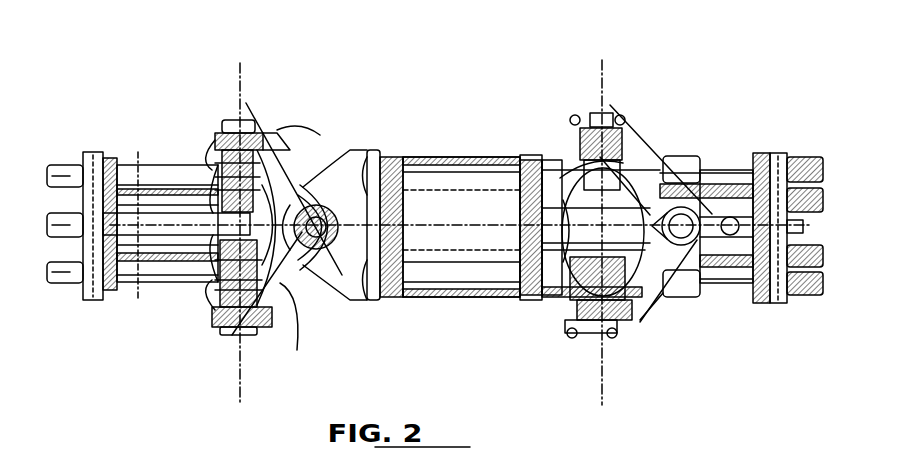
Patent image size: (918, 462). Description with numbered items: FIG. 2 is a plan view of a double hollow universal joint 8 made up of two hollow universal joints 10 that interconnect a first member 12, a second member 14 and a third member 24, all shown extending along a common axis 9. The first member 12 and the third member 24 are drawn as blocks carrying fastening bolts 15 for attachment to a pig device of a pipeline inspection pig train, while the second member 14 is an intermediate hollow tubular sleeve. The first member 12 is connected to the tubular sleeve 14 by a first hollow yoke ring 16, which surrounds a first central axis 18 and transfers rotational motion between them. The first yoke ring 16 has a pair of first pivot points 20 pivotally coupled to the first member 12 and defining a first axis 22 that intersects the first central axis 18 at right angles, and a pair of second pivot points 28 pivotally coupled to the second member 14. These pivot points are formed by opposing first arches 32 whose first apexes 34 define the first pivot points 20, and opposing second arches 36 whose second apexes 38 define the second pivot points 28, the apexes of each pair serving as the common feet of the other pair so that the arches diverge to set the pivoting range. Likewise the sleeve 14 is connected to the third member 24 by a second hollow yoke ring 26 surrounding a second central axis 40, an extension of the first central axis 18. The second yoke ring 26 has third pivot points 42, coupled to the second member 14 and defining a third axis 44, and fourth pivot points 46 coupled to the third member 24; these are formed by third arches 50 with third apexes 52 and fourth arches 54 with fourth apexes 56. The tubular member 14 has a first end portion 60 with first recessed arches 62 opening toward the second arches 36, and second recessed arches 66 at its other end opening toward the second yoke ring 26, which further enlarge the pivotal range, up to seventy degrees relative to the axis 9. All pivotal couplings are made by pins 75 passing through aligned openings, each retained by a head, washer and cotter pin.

The double hollow universal joint 8 is at (453, 61).
The axis 9 is at (152, 223).
The hollow universal joint 10 is at (290, 110).
The first member 12 is at (163, 165).
The second member 14 is at (430, 160).
The fastening bolts 15 is at (803, 300).
The first hollow yoke ring 16 is at (287, 305).
The first central axis 18 is at (277, 150).
The first pivot points 20 is at (217, 120).
The first axis 22 is at (243, 377).
The third member 24 is at (760, 152).
The second hollow yoke ring 26 is at (632, 325).
The second pivot points 28 is at (317, 290).
The first arches 32 is at (210, 287).
The first apexes 34 is at (213, 133).
The second arches 36 is at (290, 150).
The second apexes 38 is at (403, 153).
The second central axis 40 is at (718, 170).
The third pivot points 42 is at (573, 113).
The third axis 44 is at (605, 60).
The fourth pivot points 46 is at (713, 295).
The third arches 50 is at (575, 310).
The third apexes 52 is at (568, 135).
The fourth arches 54 is at (657, 130).
The fourth apexes 56 is at (727, 293).
The first end portion 60 is at (347, 260).
The first recessed arches 62 is at (367, 150).
The second recessed arches 66 is at (490, 295).
The pins 75 is at (247, 117).